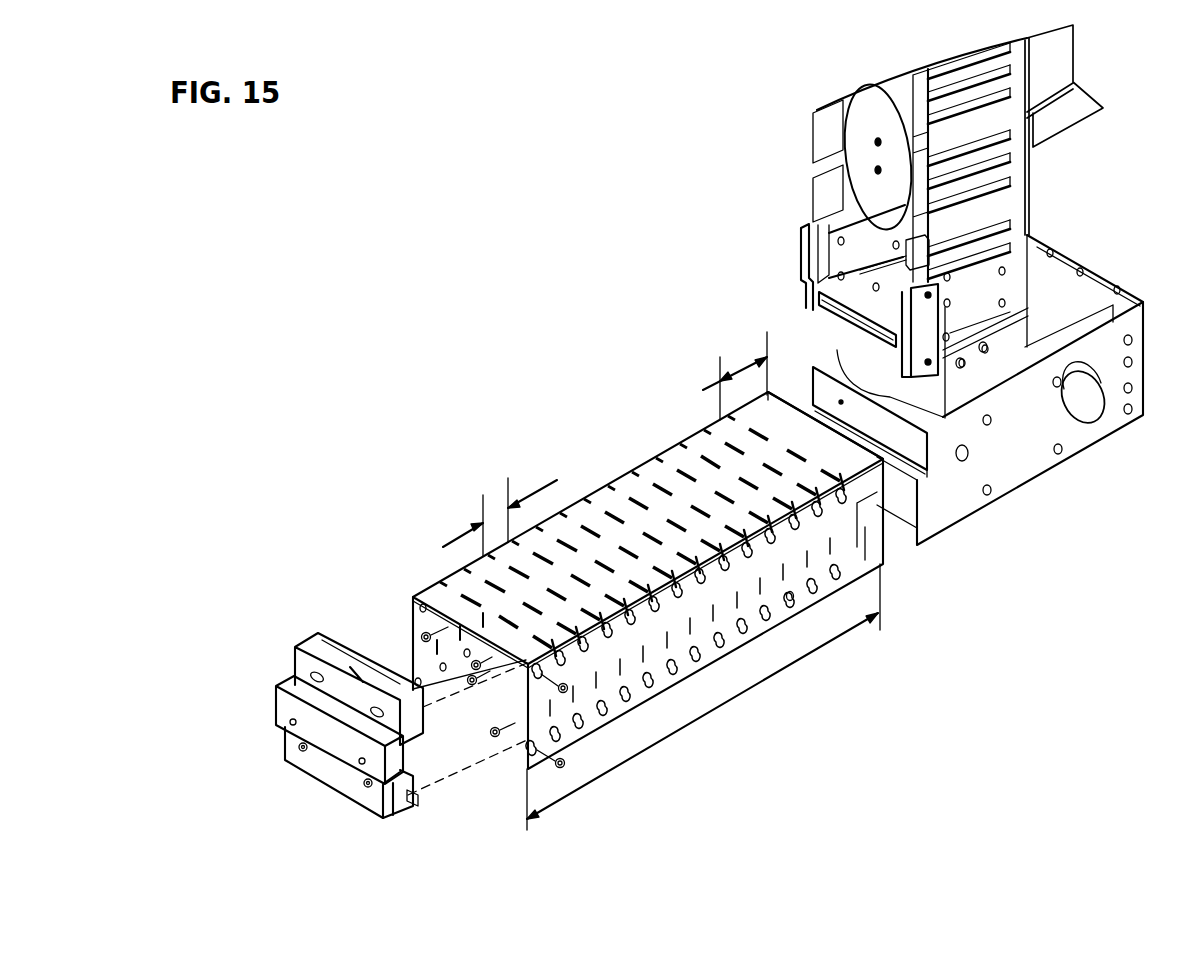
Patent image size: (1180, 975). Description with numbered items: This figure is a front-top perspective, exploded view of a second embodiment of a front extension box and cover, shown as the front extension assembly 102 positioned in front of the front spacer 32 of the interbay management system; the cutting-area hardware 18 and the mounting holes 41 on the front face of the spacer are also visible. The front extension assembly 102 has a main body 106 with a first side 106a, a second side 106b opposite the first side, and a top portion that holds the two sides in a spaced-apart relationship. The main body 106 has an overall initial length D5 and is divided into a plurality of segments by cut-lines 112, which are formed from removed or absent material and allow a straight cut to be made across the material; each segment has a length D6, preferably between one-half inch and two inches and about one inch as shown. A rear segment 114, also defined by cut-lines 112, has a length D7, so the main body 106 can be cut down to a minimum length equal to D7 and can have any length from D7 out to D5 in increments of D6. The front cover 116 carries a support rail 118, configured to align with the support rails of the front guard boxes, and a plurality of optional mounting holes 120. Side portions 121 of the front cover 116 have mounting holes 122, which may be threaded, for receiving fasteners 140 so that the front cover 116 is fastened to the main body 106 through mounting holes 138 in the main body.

The front extension assembly 102 is at (510, 393).
The main body 106 is at (425, 590).
The first side 106a is at (920, 493).
The second side 106b is at (766, 663).
The cut-lines 112 is at (653, 497).
The rear segment 114 is at (790, 410).
The front cover 116 is at (297, 650).
The support rail 118 is at (276, 687).
The mounting holes 120 is at (303, 747).
The side portions 121 is at (382, 797).
The mounting holes 122 is at (480, 797).
The mounting holes 138 is at (836, 617).
The fasteners 140 is at (636, 733).
The cutting assembly 18 is at (805, 228).
The front spacer 32 is at (1007, 463).
The mounting holes 41 is at (840, 400).
The overall initial length D5 is at (741, 698).
The segment length D6 is at (440, 535).
The rear segment length D7 is at (704, 385).